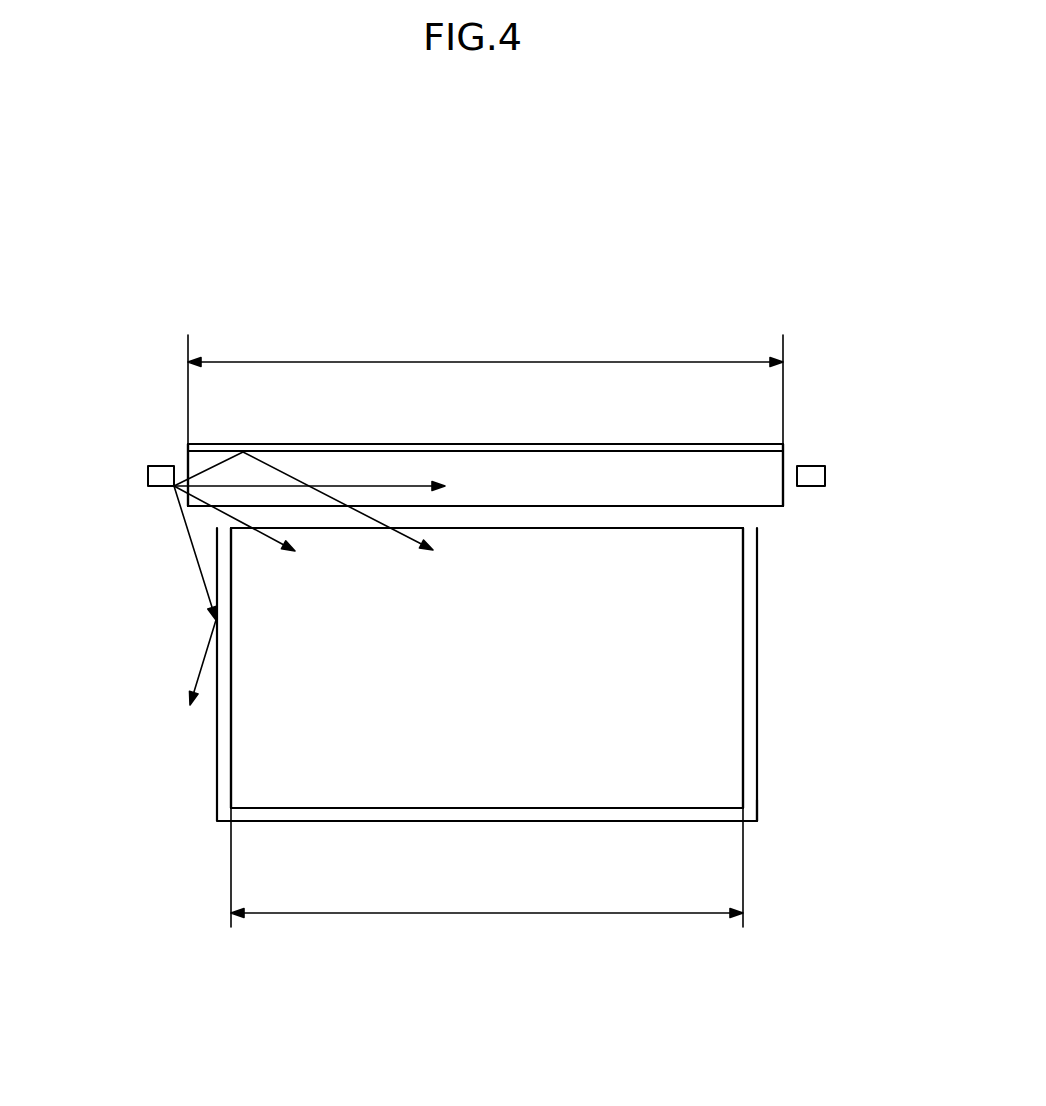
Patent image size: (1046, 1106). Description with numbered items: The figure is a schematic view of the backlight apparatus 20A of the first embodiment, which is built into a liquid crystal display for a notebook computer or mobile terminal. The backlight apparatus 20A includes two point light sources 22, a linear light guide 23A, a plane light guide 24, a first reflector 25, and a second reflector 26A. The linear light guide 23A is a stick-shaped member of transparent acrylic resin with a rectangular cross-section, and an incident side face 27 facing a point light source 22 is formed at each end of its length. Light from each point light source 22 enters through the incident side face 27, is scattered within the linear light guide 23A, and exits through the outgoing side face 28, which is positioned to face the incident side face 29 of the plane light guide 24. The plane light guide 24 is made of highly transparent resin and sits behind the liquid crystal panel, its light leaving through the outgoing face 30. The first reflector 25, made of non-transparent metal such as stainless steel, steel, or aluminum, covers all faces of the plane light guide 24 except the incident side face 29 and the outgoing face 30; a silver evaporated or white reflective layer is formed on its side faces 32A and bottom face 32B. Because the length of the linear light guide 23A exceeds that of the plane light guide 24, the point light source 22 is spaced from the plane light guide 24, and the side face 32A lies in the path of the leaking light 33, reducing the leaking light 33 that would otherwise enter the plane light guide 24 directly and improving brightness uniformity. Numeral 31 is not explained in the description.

The backlight apparatus 20A is at (497, 293).
The point light source 22 is at (148, 477).
The linear light guide 23A is at (571, 475).
The plane light guide 24 is at (728, 687).
The first reflector 25 is at (733, 797).
The second reflector 26A is at (288, 444).
The incident side face 27 is at (188, 456).
The outgoing side face 28 is at (768, 508).
The incident side face 29 is at (605, 527).
The outgoing face 30 is at (757, 822).
The reflection face 31 is at (388, 451).
The side face 32A is at (757, 643).
The bottom face 32B is at (482, 823).
The leaking light 33 is at (193, 563).